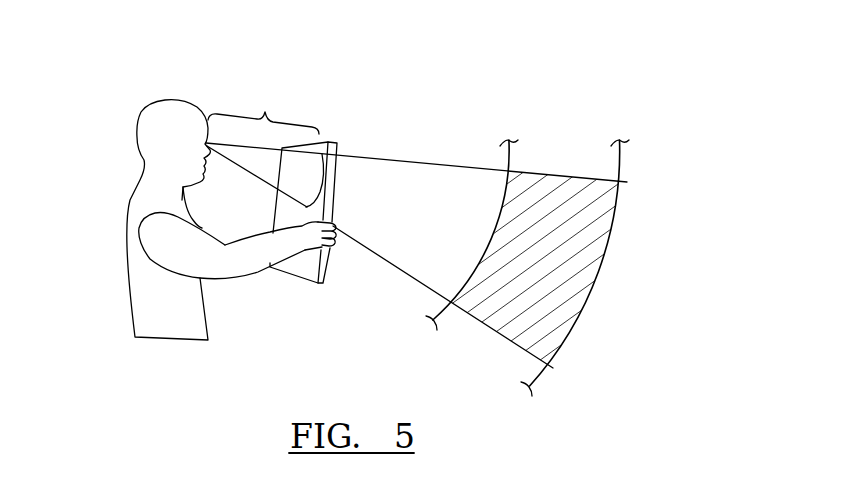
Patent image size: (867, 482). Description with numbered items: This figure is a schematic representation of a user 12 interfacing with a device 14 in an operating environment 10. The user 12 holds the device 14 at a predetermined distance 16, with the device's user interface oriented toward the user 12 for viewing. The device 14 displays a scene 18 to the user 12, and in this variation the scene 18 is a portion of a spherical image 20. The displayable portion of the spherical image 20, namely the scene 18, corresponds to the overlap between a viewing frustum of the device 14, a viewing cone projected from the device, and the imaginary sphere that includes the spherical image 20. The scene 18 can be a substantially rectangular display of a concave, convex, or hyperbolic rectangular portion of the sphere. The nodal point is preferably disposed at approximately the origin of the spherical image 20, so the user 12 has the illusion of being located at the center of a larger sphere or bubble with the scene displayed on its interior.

The operating environment 10 is at (615, 73).
The user 12 is at (137, 128).
The device 14 is at (337, 173).
The predetermined distance 16 is at (263, 109).
The scene 18 is at (583, 263).
The spherical image 20 is at (583, 167).